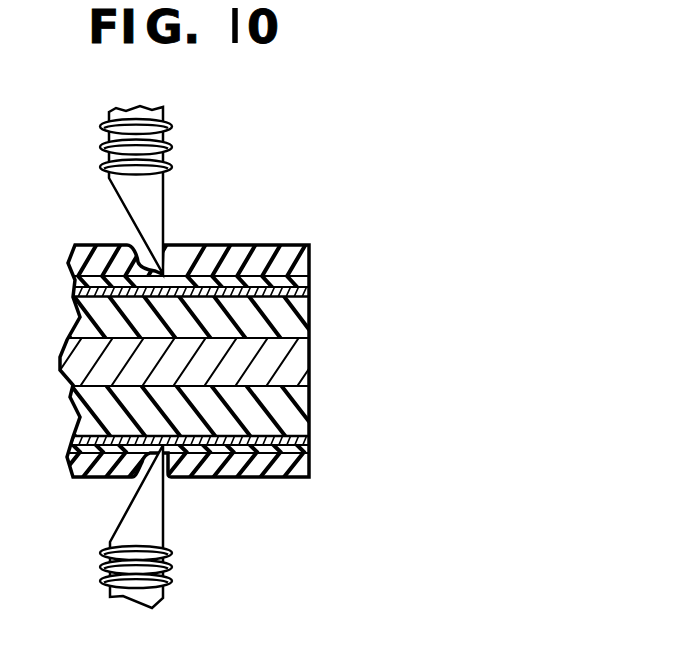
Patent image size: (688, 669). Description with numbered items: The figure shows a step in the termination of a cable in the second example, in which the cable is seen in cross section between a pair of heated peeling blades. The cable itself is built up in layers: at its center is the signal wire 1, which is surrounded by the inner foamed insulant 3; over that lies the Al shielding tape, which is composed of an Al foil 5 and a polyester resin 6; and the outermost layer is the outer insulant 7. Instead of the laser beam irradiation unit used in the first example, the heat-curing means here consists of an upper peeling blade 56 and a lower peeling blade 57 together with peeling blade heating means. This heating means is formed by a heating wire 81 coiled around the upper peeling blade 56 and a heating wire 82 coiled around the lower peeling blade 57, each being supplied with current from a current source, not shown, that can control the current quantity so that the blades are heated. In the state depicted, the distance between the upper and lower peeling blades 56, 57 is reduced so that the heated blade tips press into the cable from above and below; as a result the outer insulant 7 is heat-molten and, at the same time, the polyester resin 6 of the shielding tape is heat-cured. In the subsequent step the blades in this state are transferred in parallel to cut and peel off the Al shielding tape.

The signal wire 1 is at (298, 363).
The inner foamed insulant 3 is at (298, 326).
The Al foil 5 is at (314, 288).
The polyester resin 6 is at (303, 281).
The outer insulant 7 is at (275, 252).
The upper peeling blade 56 is at (152, 203).
The lower peeling blade 57 is at (165, 518).
The heating wire 81 is at (102, 128).
The heating wire 82 is at (103, 554).